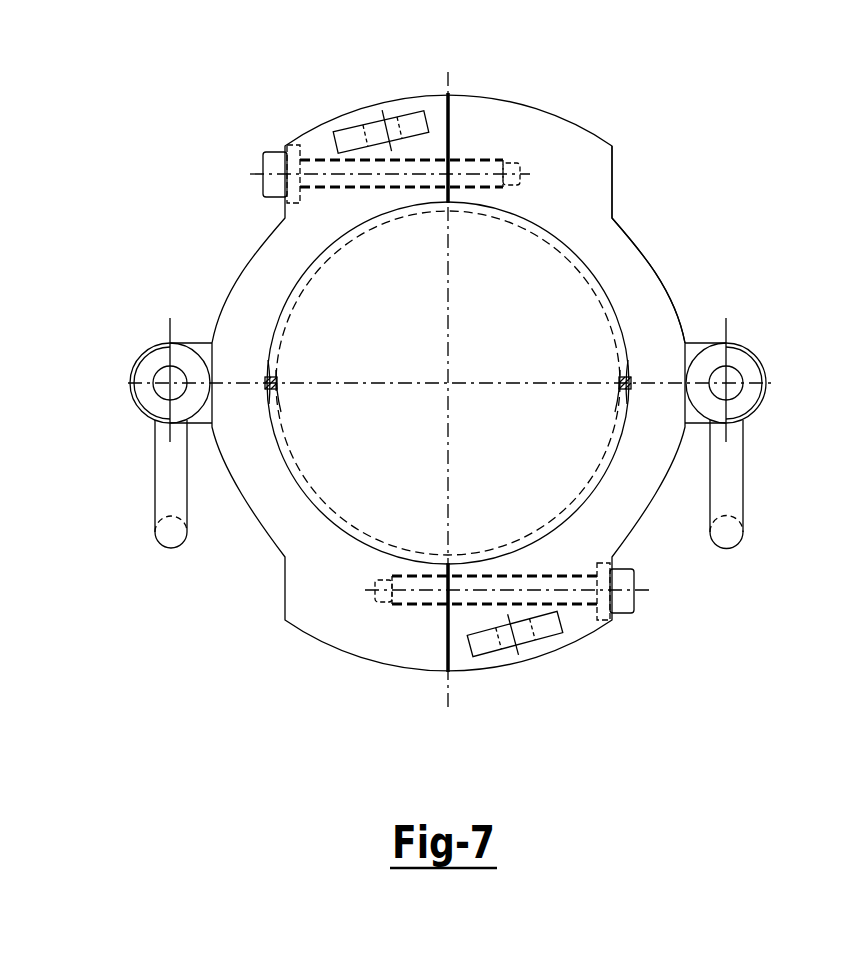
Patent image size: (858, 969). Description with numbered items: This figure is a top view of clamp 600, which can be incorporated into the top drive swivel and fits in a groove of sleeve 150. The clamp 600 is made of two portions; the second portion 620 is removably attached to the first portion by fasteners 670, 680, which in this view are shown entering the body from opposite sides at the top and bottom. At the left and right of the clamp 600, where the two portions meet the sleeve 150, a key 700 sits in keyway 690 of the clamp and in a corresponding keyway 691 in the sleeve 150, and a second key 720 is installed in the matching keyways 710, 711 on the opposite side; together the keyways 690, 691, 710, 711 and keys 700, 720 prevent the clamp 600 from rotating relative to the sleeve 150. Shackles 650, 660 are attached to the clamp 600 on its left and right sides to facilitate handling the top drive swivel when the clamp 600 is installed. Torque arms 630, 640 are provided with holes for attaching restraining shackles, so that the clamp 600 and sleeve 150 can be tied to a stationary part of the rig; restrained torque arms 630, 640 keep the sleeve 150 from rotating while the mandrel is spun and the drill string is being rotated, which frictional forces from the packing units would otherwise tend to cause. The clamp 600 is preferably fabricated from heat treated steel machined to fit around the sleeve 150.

The sleeve 150 is at (558, 255).
The clamp 600 is at (277, 640).
The second portion 620 is at (665, 246).
The torque arm 630 is at (422, 110).
The torque arm 640 is at (548, 647).
The shackle 650 is at (155, 492).
The shackle 660 is at (746, 497).
The fastener 670 is at (263, 150).
The fastener 680 is at (630, 617).
The keyway 690 is at (270, 360).
The keyway 691 is at (278, 387).
The key 700 is at (281, 410).
The keyway 710 is at (627, 362).
The keyway 711 is at (620, 388).
The second key 720 is at (616, 410).